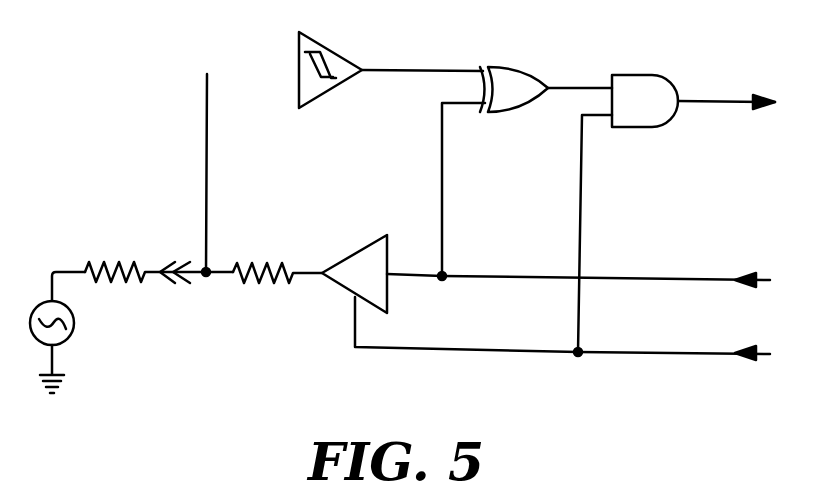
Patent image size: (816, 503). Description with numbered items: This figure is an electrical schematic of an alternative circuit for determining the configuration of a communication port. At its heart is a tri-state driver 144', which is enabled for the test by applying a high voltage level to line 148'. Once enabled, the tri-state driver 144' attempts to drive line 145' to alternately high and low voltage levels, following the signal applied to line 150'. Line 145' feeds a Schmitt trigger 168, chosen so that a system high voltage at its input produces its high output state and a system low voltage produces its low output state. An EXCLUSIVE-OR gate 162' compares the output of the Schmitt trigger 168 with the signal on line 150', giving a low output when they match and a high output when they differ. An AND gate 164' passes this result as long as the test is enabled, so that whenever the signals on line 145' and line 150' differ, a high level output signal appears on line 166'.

The Schmitt trigger 168 is at (338, 53).
The EXCLUSIVE-OR gate 162' is at (527, 149).
The AND gate 164' is at (645, 191).
The line 166' is at (728, 81).
The line 145' is at (161, 173).
The tri-state driver 144' is at (449, 273).
The line 150' is at (606, 259).
The line 148' is at (674, 375).